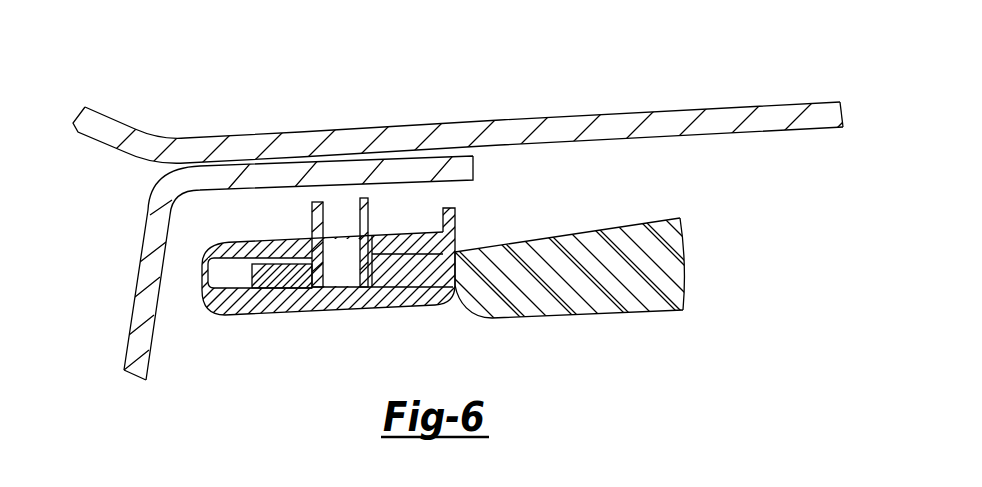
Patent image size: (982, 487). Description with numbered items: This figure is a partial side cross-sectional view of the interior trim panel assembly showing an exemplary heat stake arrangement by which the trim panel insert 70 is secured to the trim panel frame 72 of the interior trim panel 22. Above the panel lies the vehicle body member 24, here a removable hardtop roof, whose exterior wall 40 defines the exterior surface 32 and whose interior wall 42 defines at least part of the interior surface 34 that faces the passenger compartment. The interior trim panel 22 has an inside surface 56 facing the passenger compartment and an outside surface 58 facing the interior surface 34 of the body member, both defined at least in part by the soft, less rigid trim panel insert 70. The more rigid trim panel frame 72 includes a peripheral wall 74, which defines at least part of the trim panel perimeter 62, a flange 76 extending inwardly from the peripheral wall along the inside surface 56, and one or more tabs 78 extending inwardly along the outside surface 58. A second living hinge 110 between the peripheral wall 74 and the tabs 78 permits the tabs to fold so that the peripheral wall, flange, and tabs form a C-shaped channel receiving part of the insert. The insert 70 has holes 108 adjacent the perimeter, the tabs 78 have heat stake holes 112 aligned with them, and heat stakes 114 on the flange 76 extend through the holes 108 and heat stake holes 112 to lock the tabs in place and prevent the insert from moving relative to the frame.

The interior trim panel 22 is at (688, 355).
The vehicle body member 24 is at (118, 93).
The exterior surface 32 is at (452, 122).
The interior surface 34 is at (780, 140).
The exterior wall 40 is at (685, 117).
The interior wall 42 is at (137, 345).
The inside surface 56 is at (568, 320).
The outside surface 58 is at (573, 226).
The trim panel perimeter 62 is at (198, 303).
The trim panel insert 70 is at (662, 250).
The trim panel frame 72 is at (238, 332).
The peripheral wall 74 is at (210, 288).
The flange 76 is at (292, 310).
The tabs 78 is at (277, 247).
The holes 108 is at (322, 272).
The second living hinge 110 is at (212, 262).
The heat stake holes 112 is at (318, 244).
The heat stakes 114 is at (363, 202).